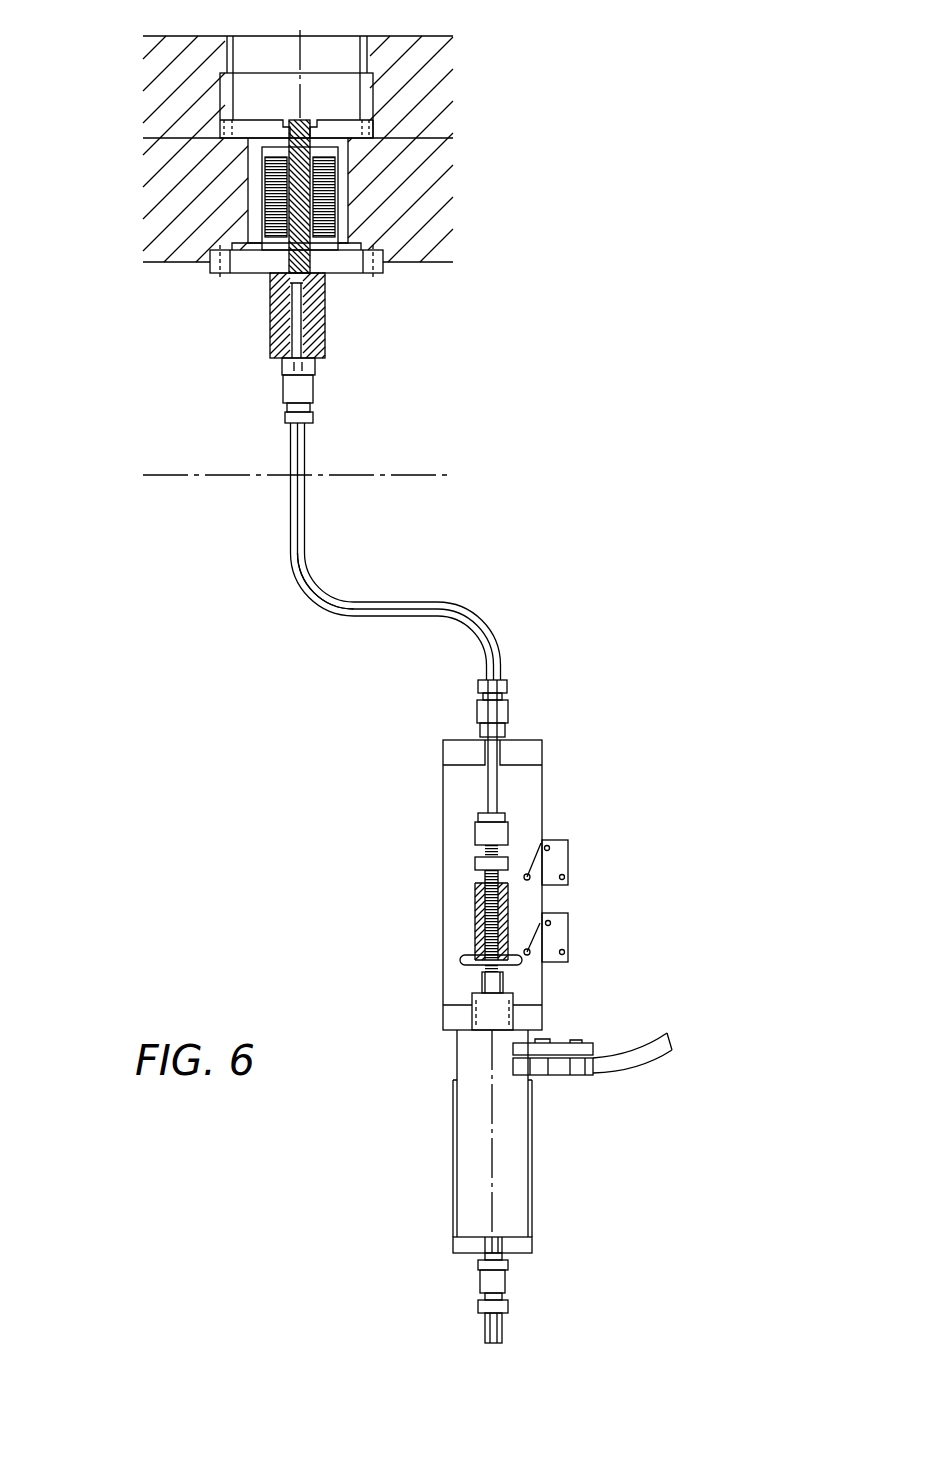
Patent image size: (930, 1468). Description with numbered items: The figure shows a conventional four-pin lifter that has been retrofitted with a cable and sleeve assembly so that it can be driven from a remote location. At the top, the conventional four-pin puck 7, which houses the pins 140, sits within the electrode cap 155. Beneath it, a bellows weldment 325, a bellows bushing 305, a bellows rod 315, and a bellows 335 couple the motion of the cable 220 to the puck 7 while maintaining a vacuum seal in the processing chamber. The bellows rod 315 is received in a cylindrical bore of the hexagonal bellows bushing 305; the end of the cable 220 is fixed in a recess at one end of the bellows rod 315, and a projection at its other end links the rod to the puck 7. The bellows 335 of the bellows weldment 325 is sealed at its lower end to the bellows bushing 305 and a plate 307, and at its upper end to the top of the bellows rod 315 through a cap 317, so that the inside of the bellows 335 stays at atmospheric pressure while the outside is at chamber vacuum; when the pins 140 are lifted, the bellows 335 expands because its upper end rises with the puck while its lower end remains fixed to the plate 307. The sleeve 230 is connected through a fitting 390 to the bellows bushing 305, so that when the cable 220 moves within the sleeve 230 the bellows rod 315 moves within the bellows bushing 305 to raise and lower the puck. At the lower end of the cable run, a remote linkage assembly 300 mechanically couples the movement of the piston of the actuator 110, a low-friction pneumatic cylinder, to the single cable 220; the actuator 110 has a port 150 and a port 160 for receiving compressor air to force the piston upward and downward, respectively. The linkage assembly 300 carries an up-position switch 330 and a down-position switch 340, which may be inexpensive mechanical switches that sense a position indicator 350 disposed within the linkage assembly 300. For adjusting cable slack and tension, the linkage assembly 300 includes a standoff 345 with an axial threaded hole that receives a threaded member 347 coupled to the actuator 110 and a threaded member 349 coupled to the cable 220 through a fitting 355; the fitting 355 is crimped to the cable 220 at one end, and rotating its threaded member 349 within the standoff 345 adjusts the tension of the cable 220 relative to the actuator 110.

The electrode cap 155 is at (150, 158).
The pins 140 is at (235, 97).
The 4-pin puck 7 is at (383, 128).
The cap 317 is at (356, 148).
The bellows rod 315 is at (263, 182).
The bellows 335 is at (240, 208).
The bellows weldment 325 is at (372, 222).
The plate 307 is at (210, 270).
The bellows bushing 305 is at (338, 315).
The fitting 390 is at (315, 385).
The cable 220 is at (300, 522).
The sleeve 230 is at (288, 589).
The linkage assembly 300 is at (430, 847).
The fitting 355 is at (508, 830).
The up-position switch 330 is at (580, 861).
The threaded member 349 is at (487, 892).
The standoff 345 is at (487, 917).
The threaded member 347 is at (480, 945).
The down-position switch 340 is at (580, 937).
The position indicator 350 is at (515, 963).
The actuator 110 is at (545, 1155).
The port 160 is at (530, 1082).
The port 150 is at (498, 1237).